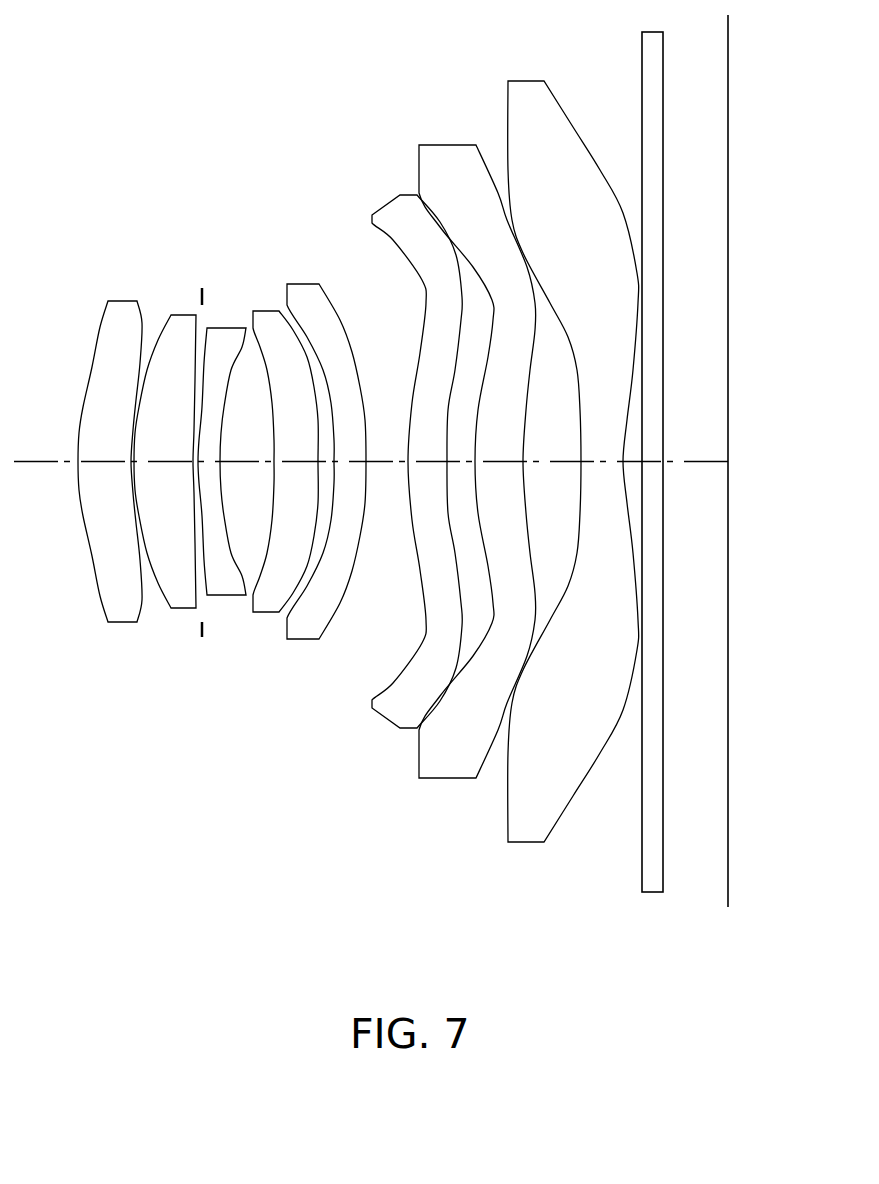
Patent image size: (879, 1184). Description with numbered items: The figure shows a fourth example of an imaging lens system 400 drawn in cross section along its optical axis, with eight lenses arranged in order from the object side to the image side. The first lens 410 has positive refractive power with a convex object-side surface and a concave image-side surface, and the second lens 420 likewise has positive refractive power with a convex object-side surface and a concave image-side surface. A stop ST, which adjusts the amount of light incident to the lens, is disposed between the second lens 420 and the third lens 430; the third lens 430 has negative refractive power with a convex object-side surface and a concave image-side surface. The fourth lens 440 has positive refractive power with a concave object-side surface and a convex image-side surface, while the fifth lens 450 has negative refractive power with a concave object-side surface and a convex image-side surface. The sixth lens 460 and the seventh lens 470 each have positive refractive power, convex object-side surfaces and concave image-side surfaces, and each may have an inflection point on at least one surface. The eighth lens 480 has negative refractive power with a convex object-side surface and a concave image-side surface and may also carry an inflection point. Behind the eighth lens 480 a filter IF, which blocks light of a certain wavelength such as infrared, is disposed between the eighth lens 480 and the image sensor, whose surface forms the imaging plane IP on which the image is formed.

The imaging lens system 400 is at (280, 172).
The first lens 410 is at (123, 622).
The second lens 420 is at (183, 608).
The third lens 430 is at (227, 595).
The fourth lens 440 is at (262, 612).
The fifth lens 450 is at (300, 639).
The sixth lens 460 is at (390, 723).
The seventh lens 470 is at (448, 778).
The eighth lens 480 is at (527, 842).
The stop ST is at (202, 297).
The filter IF is at (652, 892).
The imaging plane IP is at (728, 867).